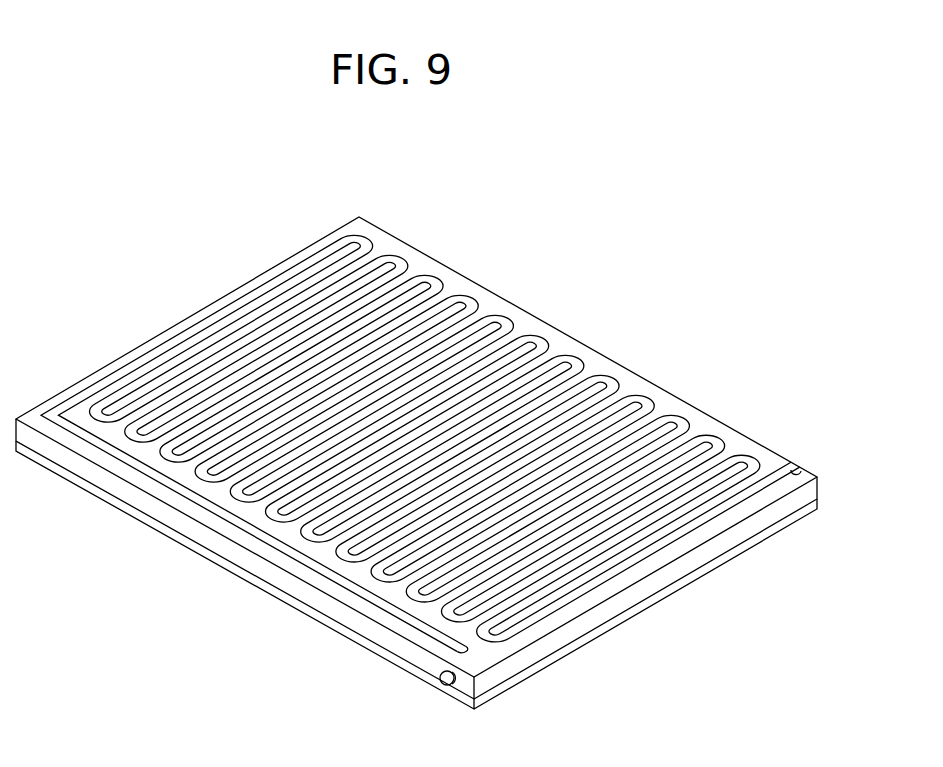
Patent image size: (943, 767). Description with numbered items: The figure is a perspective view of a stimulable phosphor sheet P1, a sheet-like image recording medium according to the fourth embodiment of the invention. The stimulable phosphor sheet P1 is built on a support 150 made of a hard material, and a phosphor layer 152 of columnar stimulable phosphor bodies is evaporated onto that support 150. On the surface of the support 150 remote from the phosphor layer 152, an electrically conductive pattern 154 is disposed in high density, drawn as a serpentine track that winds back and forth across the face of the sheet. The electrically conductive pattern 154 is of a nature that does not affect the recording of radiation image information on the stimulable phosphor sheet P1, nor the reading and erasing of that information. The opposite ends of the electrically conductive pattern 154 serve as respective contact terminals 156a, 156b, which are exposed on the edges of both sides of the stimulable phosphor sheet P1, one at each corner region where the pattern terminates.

The stimulable phosphor sheet P1 is at (200, 219).
The support 150 is at (208, 541).
The phosphor layer 152 is at (293, 606).
The electrically conductive pattern 154 is at (580, 357).
The contact terminal 156a is at (802, 467).
The contact terminal 156b is at (445, 688).